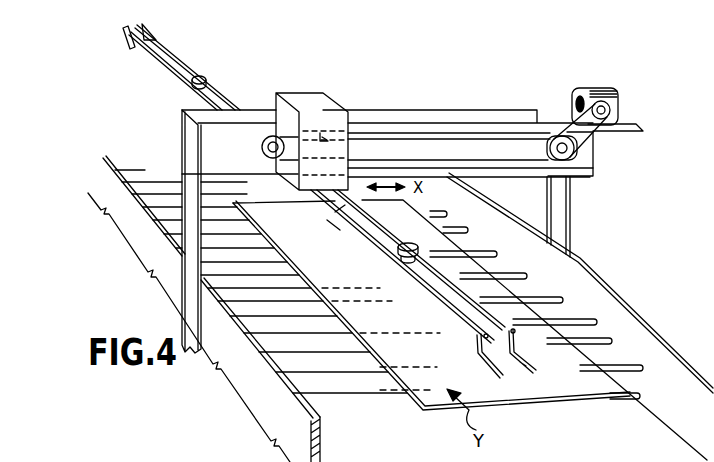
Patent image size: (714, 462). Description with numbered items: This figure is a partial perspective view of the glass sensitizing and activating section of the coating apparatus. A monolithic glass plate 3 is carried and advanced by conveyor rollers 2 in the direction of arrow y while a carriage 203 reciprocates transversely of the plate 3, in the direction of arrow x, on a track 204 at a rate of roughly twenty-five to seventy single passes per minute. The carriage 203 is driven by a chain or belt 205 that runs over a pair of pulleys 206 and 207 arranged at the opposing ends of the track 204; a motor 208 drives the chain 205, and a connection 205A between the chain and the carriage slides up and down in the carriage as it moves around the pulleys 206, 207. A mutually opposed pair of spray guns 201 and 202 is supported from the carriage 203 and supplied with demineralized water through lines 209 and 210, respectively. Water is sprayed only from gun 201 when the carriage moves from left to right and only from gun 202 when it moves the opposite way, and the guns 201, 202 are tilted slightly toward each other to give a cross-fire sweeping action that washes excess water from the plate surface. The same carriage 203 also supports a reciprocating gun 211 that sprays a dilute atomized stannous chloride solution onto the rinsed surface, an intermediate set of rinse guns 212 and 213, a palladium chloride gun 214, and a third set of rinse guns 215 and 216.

The rollers 2 is at (640, 368).
The monolithic glass plate 3 is at (415, 397).
The spray gun 201 is at (482, 367).
The spray gun 202 is at (530, 364).
The carriage 203 is at (337, 101).
The track 204 is at (522, 122).
The chain or belt 205 is at (482, 160).
The connection 205A is at (347, 150).
The pulley 206 is at (262, 148).
The pulley 207 is at (575, 160).
The motor 208 is at (617, 92).
The line 209 is at (463, 317).
The line 210 is at (497, 310).
The reciprocating gun 211 is at (419, 247).
The intermediate rinse gun 212 is at (328, 223).
The intermediate rinse gun 213 is at (335, 216).
The palladium chloride gun 214 is at (212, 62).
The third rinse gun 215 is at (126, 46).
The third rinse gun 216 is at (156, 36).